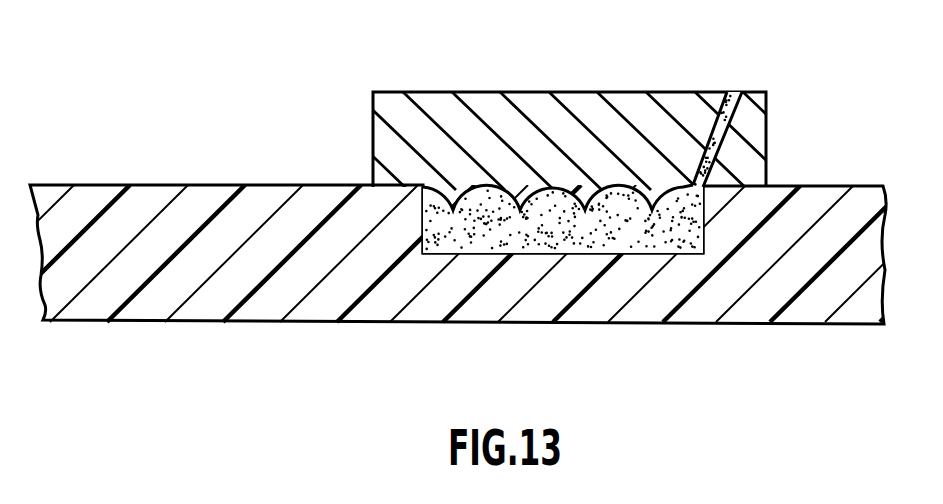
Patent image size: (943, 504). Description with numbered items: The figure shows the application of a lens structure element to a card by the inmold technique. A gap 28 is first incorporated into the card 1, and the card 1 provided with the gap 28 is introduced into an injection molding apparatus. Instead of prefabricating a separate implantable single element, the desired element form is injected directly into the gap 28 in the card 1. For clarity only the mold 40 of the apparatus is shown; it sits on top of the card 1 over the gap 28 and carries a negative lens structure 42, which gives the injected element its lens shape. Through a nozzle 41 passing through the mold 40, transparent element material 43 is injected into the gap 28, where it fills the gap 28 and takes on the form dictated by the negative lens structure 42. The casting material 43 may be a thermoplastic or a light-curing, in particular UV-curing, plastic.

The card 1 is at (85, 272).
The gap 28 is at (482, 253).
The mold 40 is at (436, 103).
The nozzle 41 is at (738, 90).
The negative lens structure 42 is at (562, 187).
The transparent element material 43 is at (660, 237).